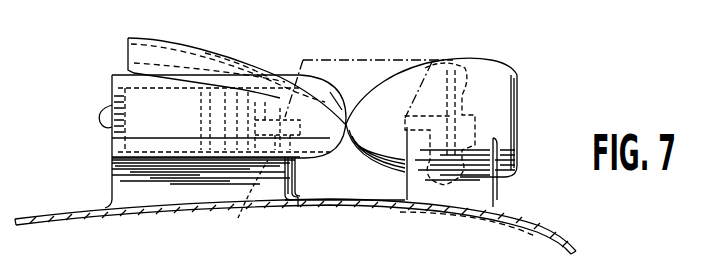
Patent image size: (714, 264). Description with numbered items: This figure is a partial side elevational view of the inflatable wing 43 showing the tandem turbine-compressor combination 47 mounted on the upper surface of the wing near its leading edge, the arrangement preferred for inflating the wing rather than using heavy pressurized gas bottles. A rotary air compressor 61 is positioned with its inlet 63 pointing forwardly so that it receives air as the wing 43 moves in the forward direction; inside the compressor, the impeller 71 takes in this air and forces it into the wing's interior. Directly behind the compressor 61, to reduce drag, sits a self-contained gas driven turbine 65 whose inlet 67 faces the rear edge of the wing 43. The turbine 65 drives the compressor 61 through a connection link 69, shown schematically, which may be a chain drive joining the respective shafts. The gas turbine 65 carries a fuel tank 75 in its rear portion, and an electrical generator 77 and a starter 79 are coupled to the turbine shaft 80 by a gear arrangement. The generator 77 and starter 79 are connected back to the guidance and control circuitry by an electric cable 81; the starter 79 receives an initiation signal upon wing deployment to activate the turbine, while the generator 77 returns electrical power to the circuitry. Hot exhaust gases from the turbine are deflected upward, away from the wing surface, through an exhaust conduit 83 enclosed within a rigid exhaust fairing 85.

The wing 43 is at (550, 231).
The turbine-compressor combination 47 is at (360, 182).
The rotary air compressor 61 is at (498, 64).
The inlet 63 is at (520, 105).
The gas driven turbine 65 is at (162, 140).
The inlet 67 is at (108, 100).
The connection link 69 is at (358, 58).
The impeller 71 is at (450, 60).
The fuel tank 75 is at (340, 94).
The electrical generator 77 is at (300, 164).
The starter 79 is at (242, 196).
The turbine shaft 80 is at (277, 116).
The electric cable 81 is at (300, 198).
The exhaust conduit 83 is at (126, 46).
The rigid exhaust fairing 85 is at (207, 52).